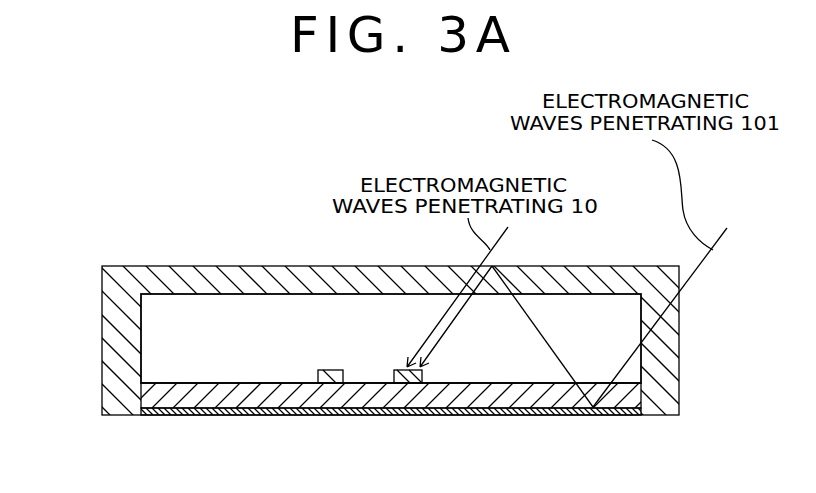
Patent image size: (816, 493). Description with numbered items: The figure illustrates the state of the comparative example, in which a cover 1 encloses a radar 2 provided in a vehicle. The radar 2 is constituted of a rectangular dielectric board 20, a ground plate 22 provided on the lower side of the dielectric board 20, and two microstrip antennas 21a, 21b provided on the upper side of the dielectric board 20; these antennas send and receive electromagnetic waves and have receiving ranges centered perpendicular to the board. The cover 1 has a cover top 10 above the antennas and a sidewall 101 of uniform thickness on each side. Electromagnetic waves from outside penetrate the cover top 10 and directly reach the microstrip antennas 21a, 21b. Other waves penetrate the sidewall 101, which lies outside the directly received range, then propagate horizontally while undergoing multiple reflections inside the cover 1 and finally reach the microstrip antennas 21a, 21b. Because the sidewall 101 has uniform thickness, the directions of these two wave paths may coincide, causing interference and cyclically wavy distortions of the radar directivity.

The cover 1 is at (408, 334).
The cover top 10 is at (265, 272).
The sidewall 101 is at (110, 337).
The radar 2 is at (385, 430).
The dielectric board 20 is at (447, 400).
The microstrip antenna 21a is at (330, 383).
The microstrip antenna 21b is at (405, 383).
The ground plate 22 is at (483, 410).